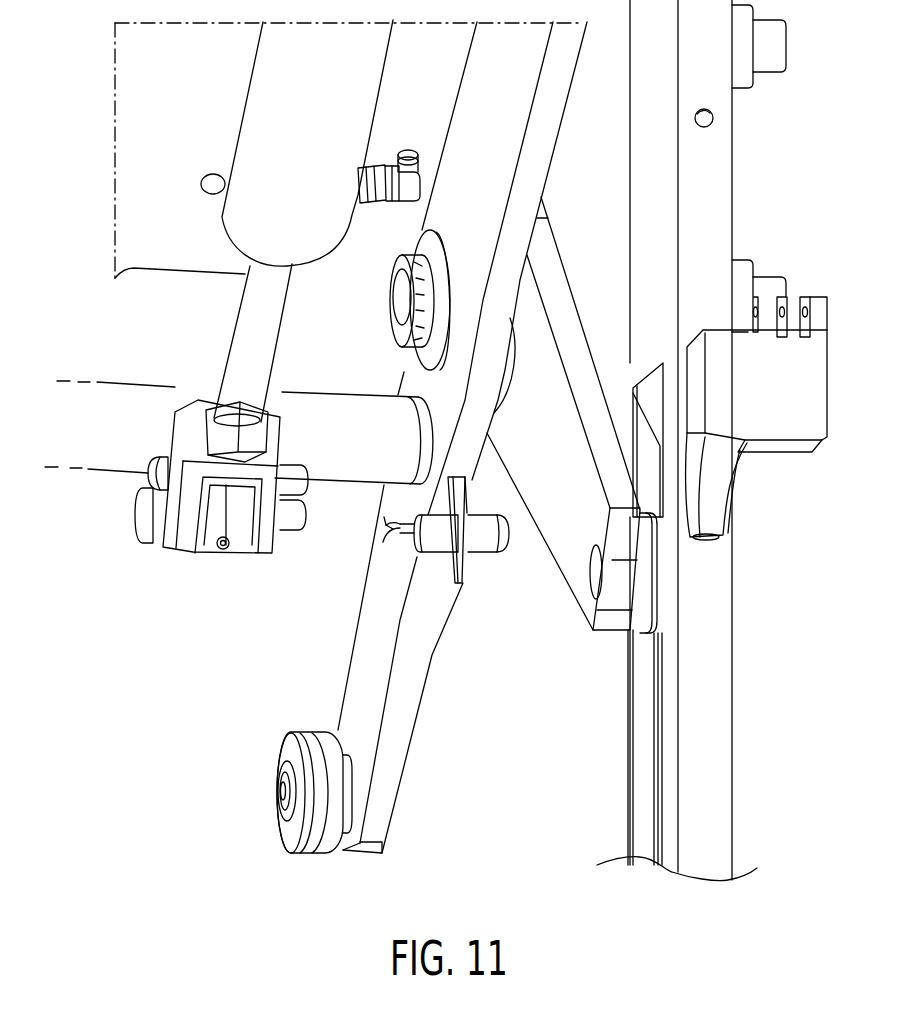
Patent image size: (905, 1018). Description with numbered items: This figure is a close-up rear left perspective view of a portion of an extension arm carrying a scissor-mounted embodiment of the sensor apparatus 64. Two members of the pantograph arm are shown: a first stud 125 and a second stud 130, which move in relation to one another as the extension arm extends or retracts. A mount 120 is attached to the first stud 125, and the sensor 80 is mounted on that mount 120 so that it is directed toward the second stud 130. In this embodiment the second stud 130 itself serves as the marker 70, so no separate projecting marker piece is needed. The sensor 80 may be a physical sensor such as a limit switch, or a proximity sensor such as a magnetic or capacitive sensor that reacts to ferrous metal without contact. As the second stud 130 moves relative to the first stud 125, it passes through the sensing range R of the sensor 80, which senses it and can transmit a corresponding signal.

The sensor apparatus 64 is at (328, 553).
The marker 70 is at (563, 305).
The sensor 80 is at (435, 527).
The mount 120 is at (465, 568).
The first stud 125 is at (417, 633).
The second stud 130 is at (580, 371).
The sensing range R is at (508, 532).